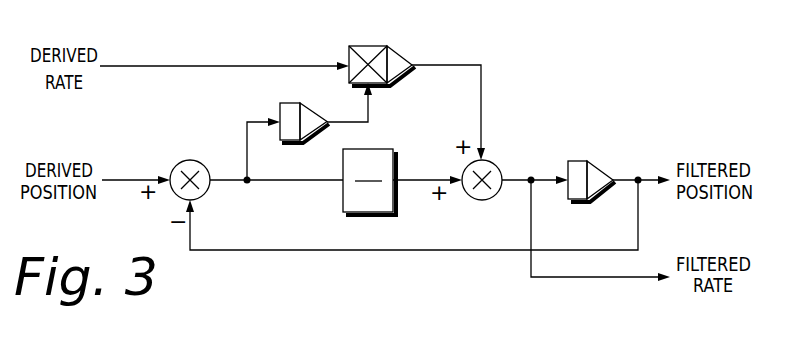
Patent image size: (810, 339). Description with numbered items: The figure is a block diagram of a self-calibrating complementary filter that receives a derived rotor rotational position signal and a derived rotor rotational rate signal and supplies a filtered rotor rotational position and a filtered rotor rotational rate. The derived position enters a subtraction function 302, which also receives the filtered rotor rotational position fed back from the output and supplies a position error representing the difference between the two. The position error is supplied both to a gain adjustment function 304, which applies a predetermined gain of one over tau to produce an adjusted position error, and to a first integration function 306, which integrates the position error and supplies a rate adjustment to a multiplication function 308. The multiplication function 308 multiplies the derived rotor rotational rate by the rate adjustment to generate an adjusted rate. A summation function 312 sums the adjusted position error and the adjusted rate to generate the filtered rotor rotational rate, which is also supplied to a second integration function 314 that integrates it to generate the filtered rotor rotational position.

The subtraction function 302 is at (178, 163).
The gain adjustment function 304 is at (361, 213).
The first integration function 306 is at (290, 103).
The multiplication function 308 is at (365, 46).
The summation function 312 is at (483, 200).
The second integration function 314 is at (582, 161).